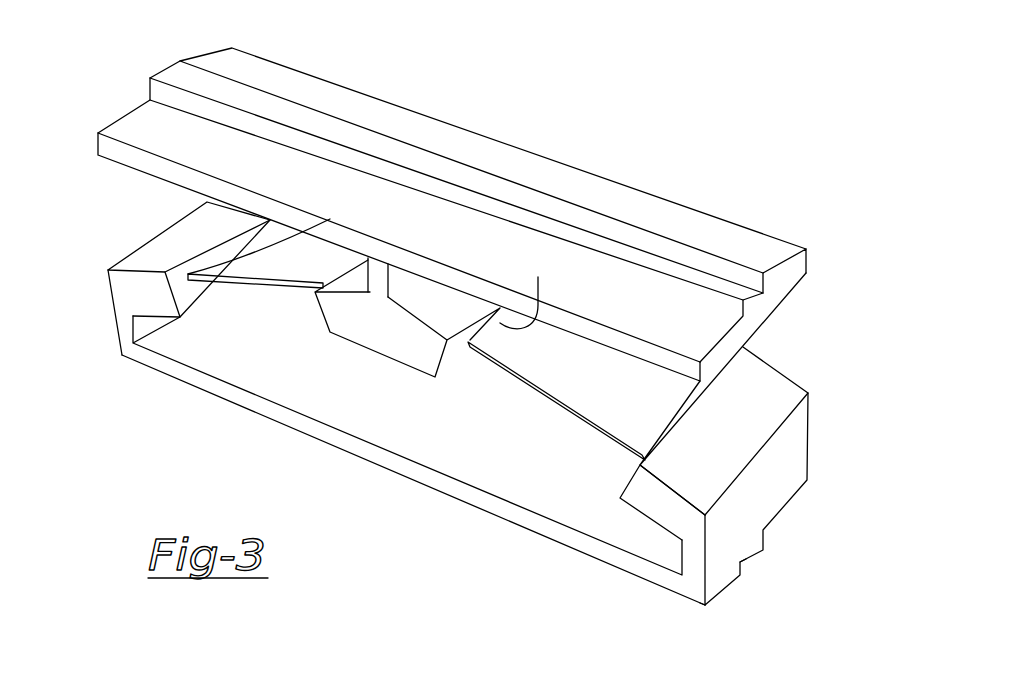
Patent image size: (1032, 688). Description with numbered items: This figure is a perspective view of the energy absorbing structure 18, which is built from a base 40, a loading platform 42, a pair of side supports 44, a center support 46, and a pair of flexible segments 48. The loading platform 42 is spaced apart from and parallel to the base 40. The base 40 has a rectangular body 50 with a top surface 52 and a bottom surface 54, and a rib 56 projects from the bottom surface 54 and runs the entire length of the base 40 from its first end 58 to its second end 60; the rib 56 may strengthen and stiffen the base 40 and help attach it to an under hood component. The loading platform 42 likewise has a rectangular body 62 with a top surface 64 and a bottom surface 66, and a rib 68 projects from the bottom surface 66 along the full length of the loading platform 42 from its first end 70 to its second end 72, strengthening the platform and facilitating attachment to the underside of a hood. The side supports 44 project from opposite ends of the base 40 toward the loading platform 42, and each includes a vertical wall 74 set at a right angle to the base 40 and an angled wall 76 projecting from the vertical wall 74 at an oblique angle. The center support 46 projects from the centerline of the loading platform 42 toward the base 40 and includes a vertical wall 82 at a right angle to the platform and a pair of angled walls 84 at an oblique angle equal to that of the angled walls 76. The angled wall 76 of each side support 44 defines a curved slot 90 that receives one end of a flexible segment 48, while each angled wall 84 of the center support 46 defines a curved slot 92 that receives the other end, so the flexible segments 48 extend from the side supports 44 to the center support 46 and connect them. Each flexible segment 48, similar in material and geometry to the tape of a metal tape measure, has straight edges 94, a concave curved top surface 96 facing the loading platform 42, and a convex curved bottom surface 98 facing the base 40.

The energy absorbing structure 18 is at (597, 104).
The base 40 is at (464, 392).
The loading platform 42 is at (469, 197).
The side support 44 is at (464, 399).
The center support 46 is at (418, 341).
The flexible segment 48 is at (425, 378).
The rectangular body 50 is at (332, 440).
The top surface 52 is at (457, 460).
The bottom surface 54 is at (220, 401).
The rib 56 is at (752, 560).
The first end 58 is at (122, 348).
The second end 60 is at (712, 592).
The rectangular body 62 is at (115, 118).
The top surface 64 is at (427, 132).
The bottom surface 66 is at (118, 168).
The rib 68 is at (160, 90).
The first end 70 is at (213, 58).
The second end 72 is at (800, 266).
The vertical wall 74 is at (123, 326).
The angled wall 76 is at (150, 298).
The vertical wall 82 is at (397, 280).
The angled wall 84 is at (355, 325).
The curved slot 90 is at (236, 255).
The curved slot 92 is at (527, 290).
The straight edges 94 is at (237, 284).
The curved top surface 96 is at (280, 247).
The curved bottom surface 98 is at (299, 294).